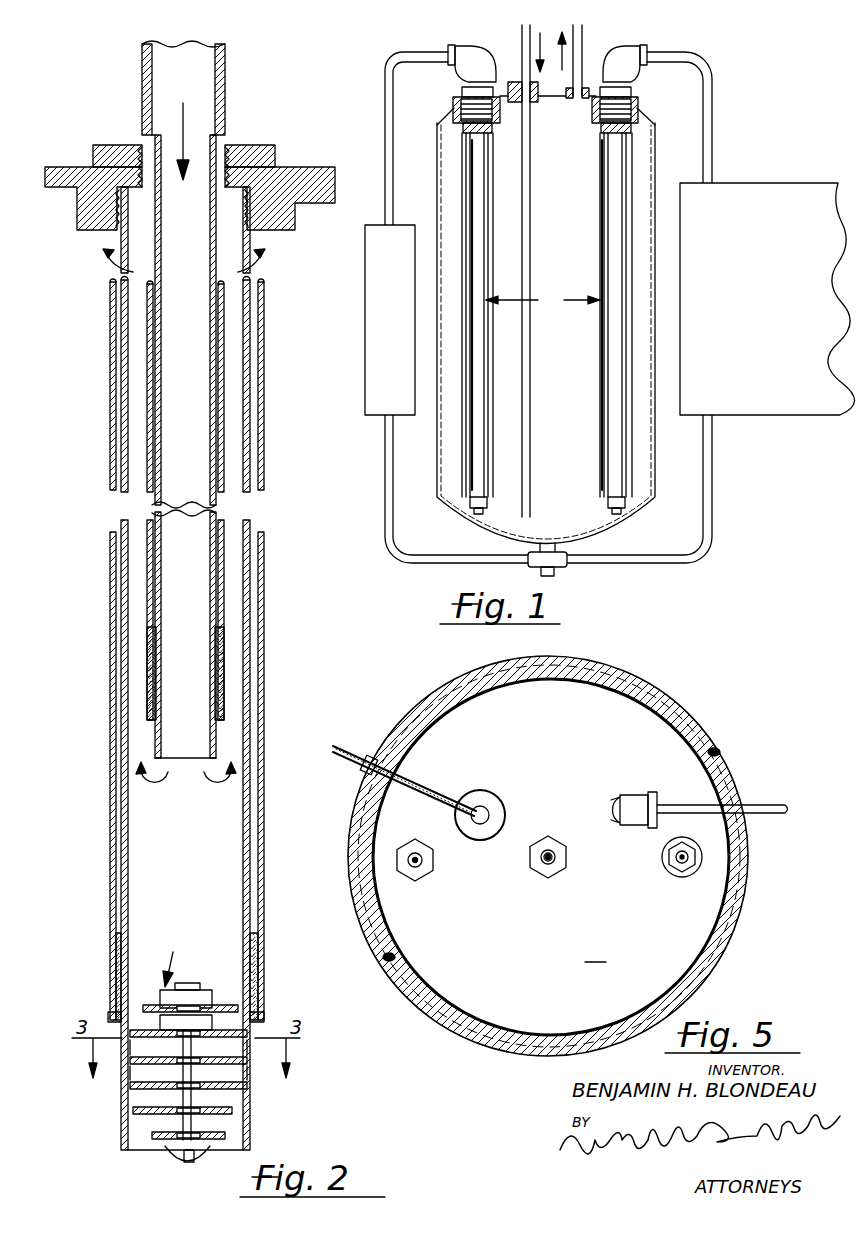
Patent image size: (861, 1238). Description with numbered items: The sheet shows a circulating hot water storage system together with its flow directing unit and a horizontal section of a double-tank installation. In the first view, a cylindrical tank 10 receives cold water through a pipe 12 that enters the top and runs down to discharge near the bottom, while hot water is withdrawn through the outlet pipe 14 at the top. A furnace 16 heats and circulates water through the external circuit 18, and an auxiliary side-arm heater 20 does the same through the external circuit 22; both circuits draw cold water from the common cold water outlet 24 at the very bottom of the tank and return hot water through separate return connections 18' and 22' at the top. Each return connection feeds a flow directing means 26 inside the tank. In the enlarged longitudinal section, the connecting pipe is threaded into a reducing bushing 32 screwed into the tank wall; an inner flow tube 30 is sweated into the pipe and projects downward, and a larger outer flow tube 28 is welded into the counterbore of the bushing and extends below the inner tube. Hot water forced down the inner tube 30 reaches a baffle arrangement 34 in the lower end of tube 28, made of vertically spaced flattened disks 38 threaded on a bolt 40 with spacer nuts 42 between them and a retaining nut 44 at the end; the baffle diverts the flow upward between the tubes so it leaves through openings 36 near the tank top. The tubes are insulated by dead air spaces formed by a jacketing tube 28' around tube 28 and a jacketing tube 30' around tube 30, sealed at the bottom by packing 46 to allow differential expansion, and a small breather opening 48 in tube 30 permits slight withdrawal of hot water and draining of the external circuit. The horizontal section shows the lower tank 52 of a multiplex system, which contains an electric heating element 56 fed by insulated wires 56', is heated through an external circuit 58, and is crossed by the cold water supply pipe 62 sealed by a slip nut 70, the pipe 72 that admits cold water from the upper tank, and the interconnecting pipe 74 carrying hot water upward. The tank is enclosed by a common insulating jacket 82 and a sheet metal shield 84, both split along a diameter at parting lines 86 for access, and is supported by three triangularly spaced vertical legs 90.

In FIG. 1, the cylindrical tank 10 is at (446, 508).
In FIG. 2, the cylindrical tank 10 is at (310, 183).
In FIG. 1, the cold water pipe 12 is at (521, 38).
In FIG. 1, the outlet pipe 14 is at (583, 37).
In FIG. 1, the furnace 16 is at (767, 192).
In FIG. 1, the external circuit 18 is at (658, 324).
In FIG. 1, the hot water return connection 18' is at (637, 73).
In FIG. 1, the side-arm heater 20 is at (371, 398).
In FIG. 1, the external circuit 22 is at (440, 307).
In FIG. 1, the hot water return connection 22' is at (457, 66).
In FIG. 2, the hot water return connection 22' is at (207, 110).
In FIG. 1, the cold water outlet 24 is at (560, 548).
In FIG. 1, the flow directing means 26 is at (547, 315).
In FIG. 2, the flow directing means 26 is at (278, 606).
In FIG. 1, the outer flow tube 28 is at (562, 524).
In FIG. 2, the outer flow tube 28 is at (159, 668).
In FIG. 1, the jacketing tube 28' is at (537, 315).
In FIG. 2, the jacketing tube 28' is at (164, 650).
In FIG. 2, the inner flow tube 30 is at (228, 635).
In FIG. 2, the jacketing tube 30' is at (226, 500).
In FIG. 1, the reducing bushing 32 is at (458, 98).
In FIG. 2, the reducing bushing 32 is at (252, 150).
In FIG. 5, the reducing bushing 32 is at (617, 795).
In FIG. 2, the baffle arrangement 34 is at (177, 956).
In FIG. 1, the openings 36 is at (598, 129).
In FIG. 2, the openings 36 is at (120, 260).
In FIG. 2, the disks 38 is at (236, 1117).
In FIG. 2, the bolt 40 is at (181, 1159).
In FIG. 2, the spacer nuts 42 is at (168, 1123).
In FIG. 2, the retaining nut 44 is at (205, 996).
In FIG. 2, the packing 46 is at (150, 725).
In FIG. 2, the breather opening 48 is at (211, 270).
In FIG. 5, the lower tank 52 is at (597, 951).
In FIG. 5, the electric heating element 56 is at (487, 806).
In FIG. 5, the insulated wires 56' is at (404, 781).
In FIG. 5, the external circuit 58 is at (768, 803).
In FIG. 5, the cold water supply pipe 62 is at (550, 850).
In FIG. 5, the slip nut 70 is at (556, 870).
In FIG. 5, the pipe 72 is at (433, 866).
In FIG. 5, the interconnecting pipe 74 is at (680, 872).
In FIG. 5, the insulating jacket 82 is at (731, 899).
In FIG. 5, the sheet metal shield 84 is at (636, 665).
In FIG. 5, the parting lines 86 is at (716, 750).
In FIG. 5, the vertical legs 90 is at (452, 700).